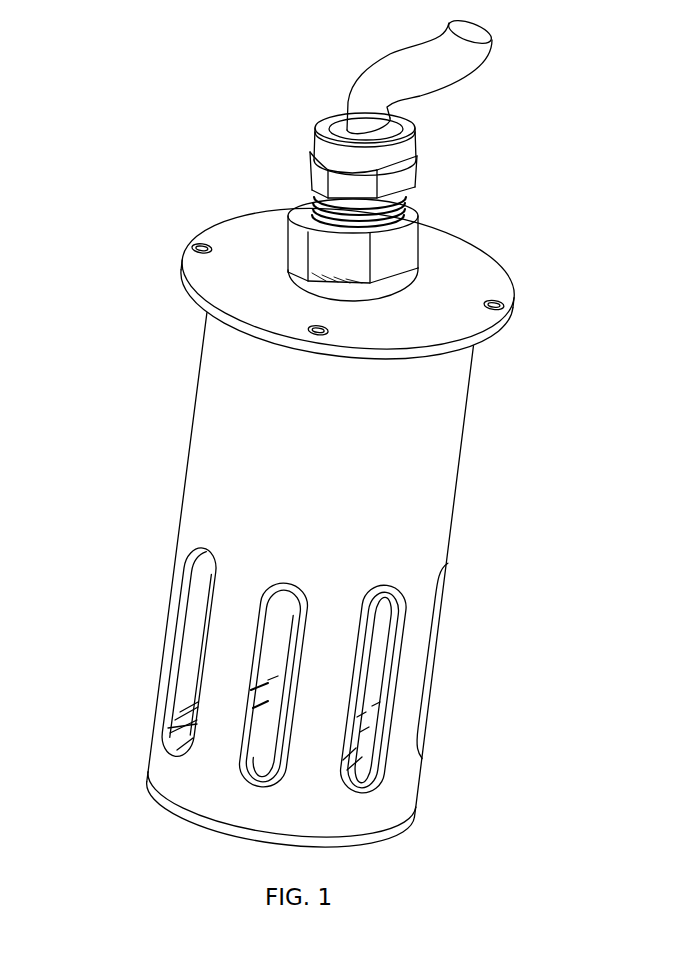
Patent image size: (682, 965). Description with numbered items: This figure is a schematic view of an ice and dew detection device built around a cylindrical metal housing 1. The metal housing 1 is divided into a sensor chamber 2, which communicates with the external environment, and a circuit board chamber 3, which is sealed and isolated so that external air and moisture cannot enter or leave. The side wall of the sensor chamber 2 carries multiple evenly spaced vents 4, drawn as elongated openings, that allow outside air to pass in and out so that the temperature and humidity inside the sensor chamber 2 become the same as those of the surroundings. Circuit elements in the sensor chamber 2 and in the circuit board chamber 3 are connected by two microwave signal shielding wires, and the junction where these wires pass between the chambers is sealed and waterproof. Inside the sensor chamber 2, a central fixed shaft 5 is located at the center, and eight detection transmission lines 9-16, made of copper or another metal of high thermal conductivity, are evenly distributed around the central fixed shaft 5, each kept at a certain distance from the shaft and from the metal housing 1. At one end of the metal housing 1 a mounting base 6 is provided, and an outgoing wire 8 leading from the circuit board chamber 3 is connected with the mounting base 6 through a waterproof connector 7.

The cylindrical metal housing 1 is at (178, 505).
The sensor chamber 2 is at (192, 677).
The circuit board chamber 3 is at (242, 403).
The vents 4 is at (192, 592).
The central fixed shaft 5 is at (258, 742).
The mounting base 6 is at (460, 325).
The waterproof connector 7 is at (400, 186).
The outgoing wire 8 is at (362, 77).
The detection transmission lines 9-16 is at (387, 748).